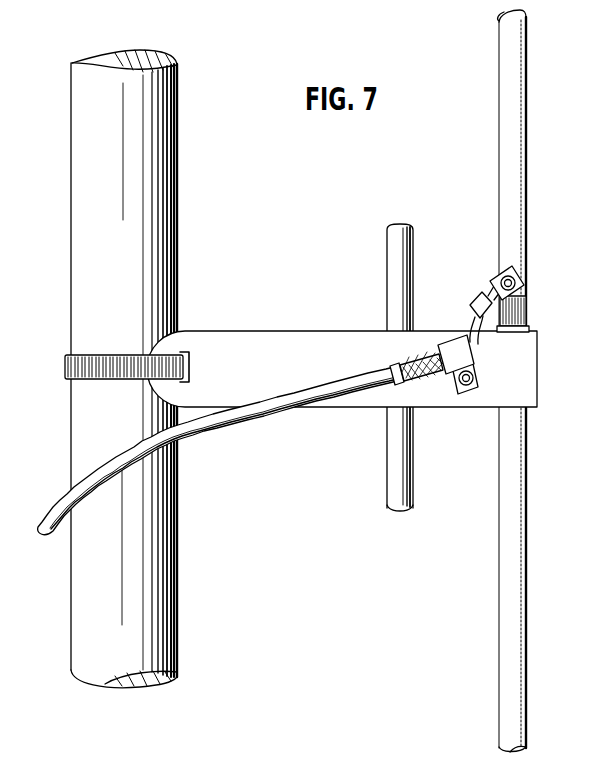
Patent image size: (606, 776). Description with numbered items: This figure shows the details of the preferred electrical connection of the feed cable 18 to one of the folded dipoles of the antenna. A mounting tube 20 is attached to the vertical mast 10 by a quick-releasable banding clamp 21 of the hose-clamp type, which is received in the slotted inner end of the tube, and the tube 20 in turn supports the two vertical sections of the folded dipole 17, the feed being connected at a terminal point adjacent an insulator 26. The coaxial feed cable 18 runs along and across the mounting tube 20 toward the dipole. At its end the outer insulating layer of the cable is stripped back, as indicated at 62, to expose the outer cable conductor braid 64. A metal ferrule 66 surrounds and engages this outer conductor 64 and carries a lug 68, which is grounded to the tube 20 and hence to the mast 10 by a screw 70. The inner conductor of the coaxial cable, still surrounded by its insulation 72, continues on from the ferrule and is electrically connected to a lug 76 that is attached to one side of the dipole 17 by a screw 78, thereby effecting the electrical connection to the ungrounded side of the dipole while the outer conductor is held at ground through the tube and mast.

The mast 10 is at (157, 176).
The folded dipole 17 is at (500, 553).
The feed cable 18 is at (270, 410).
The mounting tube 20 is at (253, 343).
The banding clamp 21 is at (70, 362).
The insulator 26 is at (515, 332).
The stripped end of cable 62 is at (387, 370).
The outer cable conductor braid 64 is at (434, 357).
The metal ferrule 66 is at (449, 374).
The lug 68 is at (472, 364).
The screw 70 is at (464, 393).
The insulation 72 is at (475, 326).
The lug 76 is at (493, 282).
The screw 78 is at (504, 273).